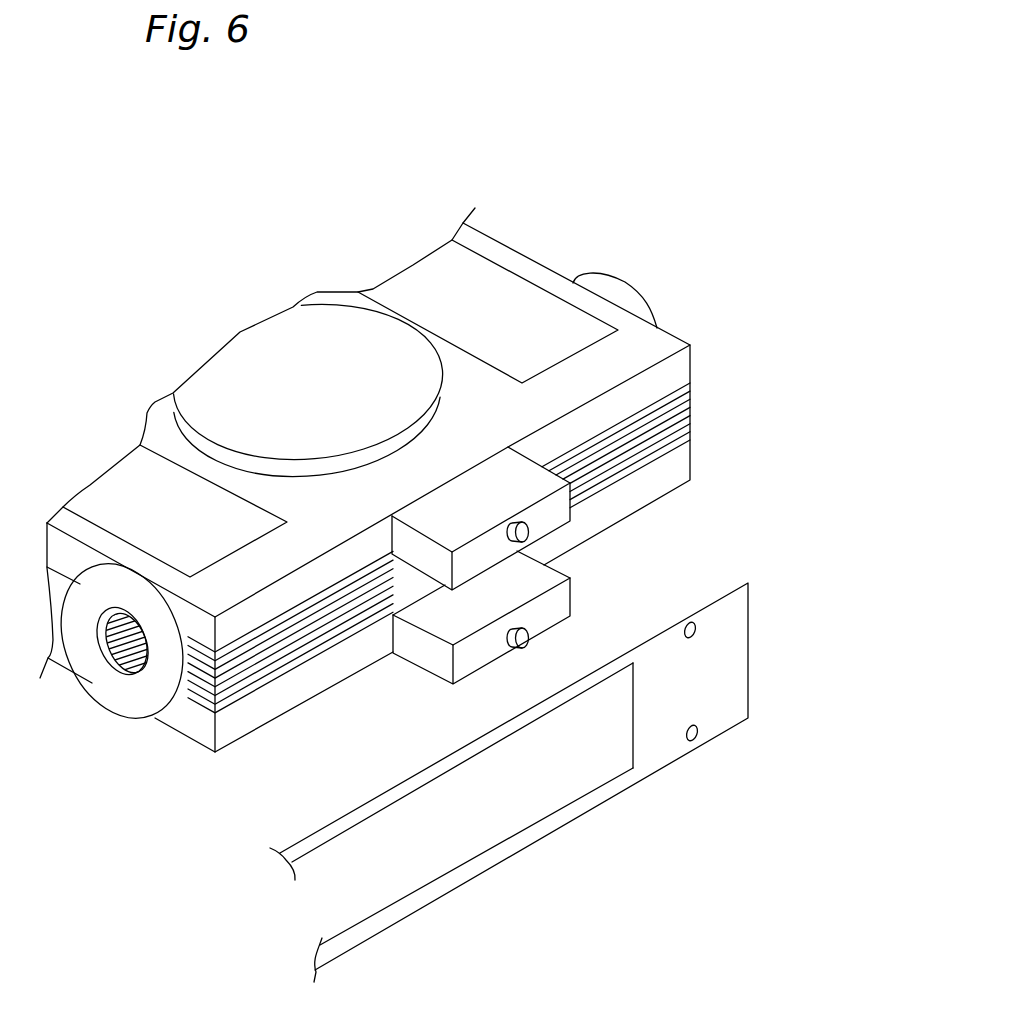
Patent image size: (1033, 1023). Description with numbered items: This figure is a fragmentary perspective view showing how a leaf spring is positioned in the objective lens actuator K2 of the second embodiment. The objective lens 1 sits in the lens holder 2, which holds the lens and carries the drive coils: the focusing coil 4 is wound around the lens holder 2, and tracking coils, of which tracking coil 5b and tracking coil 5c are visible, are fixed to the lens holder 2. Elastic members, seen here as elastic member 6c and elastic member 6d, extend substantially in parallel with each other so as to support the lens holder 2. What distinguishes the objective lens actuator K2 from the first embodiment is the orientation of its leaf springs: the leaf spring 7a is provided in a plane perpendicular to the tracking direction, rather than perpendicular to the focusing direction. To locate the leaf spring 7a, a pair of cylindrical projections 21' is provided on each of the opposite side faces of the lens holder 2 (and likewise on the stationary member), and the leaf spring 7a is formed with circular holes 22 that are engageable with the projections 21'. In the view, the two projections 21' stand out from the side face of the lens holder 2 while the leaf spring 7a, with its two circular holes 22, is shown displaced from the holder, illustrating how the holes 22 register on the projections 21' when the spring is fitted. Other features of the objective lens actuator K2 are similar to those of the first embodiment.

The objective lens actuator K2 is at (716, 111).
The objective lens 1 is at (345, 362).
The lens holder 2 is at (648, 347).
The focusing coil 4 is at (690, 403).
The tracking coil 5b is at (612, 293).
The tracking coil 5c is at (122, 690).
The cylindrical projections 21' is at (544, 565).
The circular holes 22 is at (697, 731).
The leaf spring 7a is at (735, 703).
The elastic member 6c is at (370, 813).
The elastic member 6d is at (475, 867).